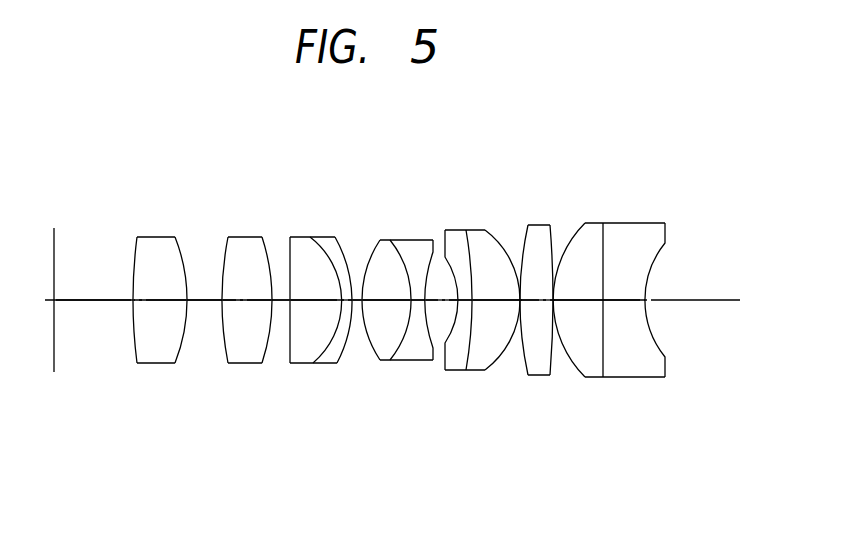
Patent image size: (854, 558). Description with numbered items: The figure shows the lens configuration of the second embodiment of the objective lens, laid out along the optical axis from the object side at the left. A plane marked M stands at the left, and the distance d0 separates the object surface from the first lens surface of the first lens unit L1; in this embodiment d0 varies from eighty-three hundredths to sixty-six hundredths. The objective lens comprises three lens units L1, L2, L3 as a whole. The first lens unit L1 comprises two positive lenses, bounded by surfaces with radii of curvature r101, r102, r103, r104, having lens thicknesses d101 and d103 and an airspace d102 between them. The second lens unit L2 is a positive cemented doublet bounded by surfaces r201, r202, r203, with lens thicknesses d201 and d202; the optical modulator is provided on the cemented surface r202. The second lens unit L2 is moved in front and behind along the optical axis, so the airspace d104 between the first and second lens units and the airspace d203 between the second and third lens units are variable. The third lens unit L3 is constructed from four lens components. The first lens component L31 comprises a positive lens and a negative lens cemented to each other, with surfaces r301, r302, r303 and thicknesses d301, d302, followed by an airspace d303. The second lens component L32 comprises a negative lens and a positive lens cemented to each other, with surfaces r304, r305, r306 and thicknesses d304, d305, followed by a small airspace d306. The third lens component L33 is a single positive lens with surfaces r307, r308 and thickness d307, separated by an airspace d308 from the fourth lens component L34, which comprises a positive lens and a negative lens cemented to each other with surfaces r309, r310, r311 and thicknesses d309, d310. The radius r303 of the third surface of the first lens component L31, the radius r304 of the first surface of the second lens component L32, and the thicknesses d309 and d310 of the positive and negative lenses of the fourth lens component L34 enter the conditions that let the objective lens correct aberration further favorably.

The mask (object) plane M is at (54, 370).
The distance between object surface and first lens surface d0 is at (88, 300).
The first lens unit L1 is at (260, 487).
The second lens unit L2 is at (337, 487).
The third lens unit L3 is at (675, 488).
The first lens component L31 is at (432, 142).
The second lens component L32 is at (508, 142).
The third lens component L33 is at (555, 142).
The fourth lens component L34 is at (670, 142).
The lens thickness d101 is at (153, 300).
The airspace d102 is at (203, 300).
The lens thickness d103 is at (244, 300).
The variable airspace d104 is at (279, 300).
The lens thickness d201 is at (308, 300).
The lens thickness d202 is at (347, 300).
The variable airspace d203 is at (358, 300).
The lens thickness d301 is at (388, 300).
The lens thickness d302 is at (418, 300).
The airspace d303 is at (440, 300).
The lens thickness d304 is at (464, 300).
The lens thickness d305 is at (490, 300).
The airspace d306 is at (520, 300).
The lens thickness d307 is at (536, 300).
The airspace d308 is at (554, 300).
The thickness of positive lens d309 is at (583, 300).
The thickness of negative lens d310 is at (622, 300).
The radius of curvature r101 is at (137, 361).
The radius of curvature r102 is at (177, 361).
The radius of curvature r103 is at (228, 363).
The radius of curvature r104 is at (259, 361).
The radius of curvature r201 is at (290, 363).
The radius of curvature r202 is at (313, 363).
The radius of curvature r203 is at (337, 363).
The radius of curvature r301 is at (380, 360).
The radius of curvature r302 is at (415, 360).
The radius of curvature of third surface r303 is at (433, 360).
The radius of curvature of first surface r304 is at (445, 370).
The radius of curvature r305 is at (466, 370).
The radius of curvature r306 is at (487, 370).
The radius of curvature r307 is at (527, 375).
The radius of curvature r308 is at (550, 375).
The radius of curvature r309 is at (586, 377).
The radius of curvature r310 is at (603, 377).
The radius of curvature r311 is at (655, 377).